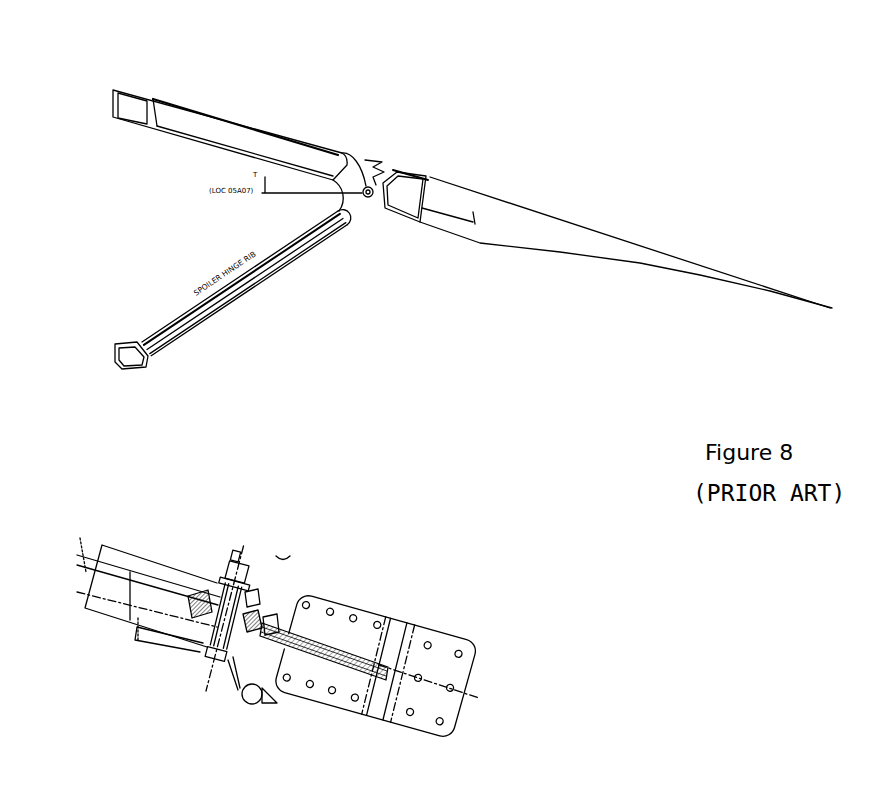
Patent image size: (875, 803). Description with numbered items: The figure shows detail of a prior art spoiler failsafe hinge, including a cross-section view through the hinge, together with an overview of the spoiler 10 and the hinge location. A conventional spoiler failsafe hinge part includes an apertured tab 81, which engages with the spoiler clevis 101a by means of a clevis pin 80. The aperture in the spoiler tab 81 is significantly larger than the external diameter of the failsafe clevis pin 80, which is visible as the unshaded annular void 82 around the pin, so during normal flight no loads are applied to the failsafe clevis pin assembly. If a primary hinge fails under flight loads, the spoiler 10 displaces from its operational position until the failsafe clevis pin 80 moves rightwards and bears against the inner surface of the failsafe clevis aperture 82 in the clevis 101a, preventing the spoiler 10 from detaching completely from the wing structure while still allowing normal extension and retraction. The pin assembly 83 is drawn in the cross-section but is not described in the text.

The spoiler 10 is at (535, 232).
The clevis pin 80 is at (374, 199).
The apertured tab 81 is at (310, 592).
The annular void 82 is at (213, 600).
The hinge pin 83 is at (207, 648).
The spoiler clevis 101a is at (353, 177).